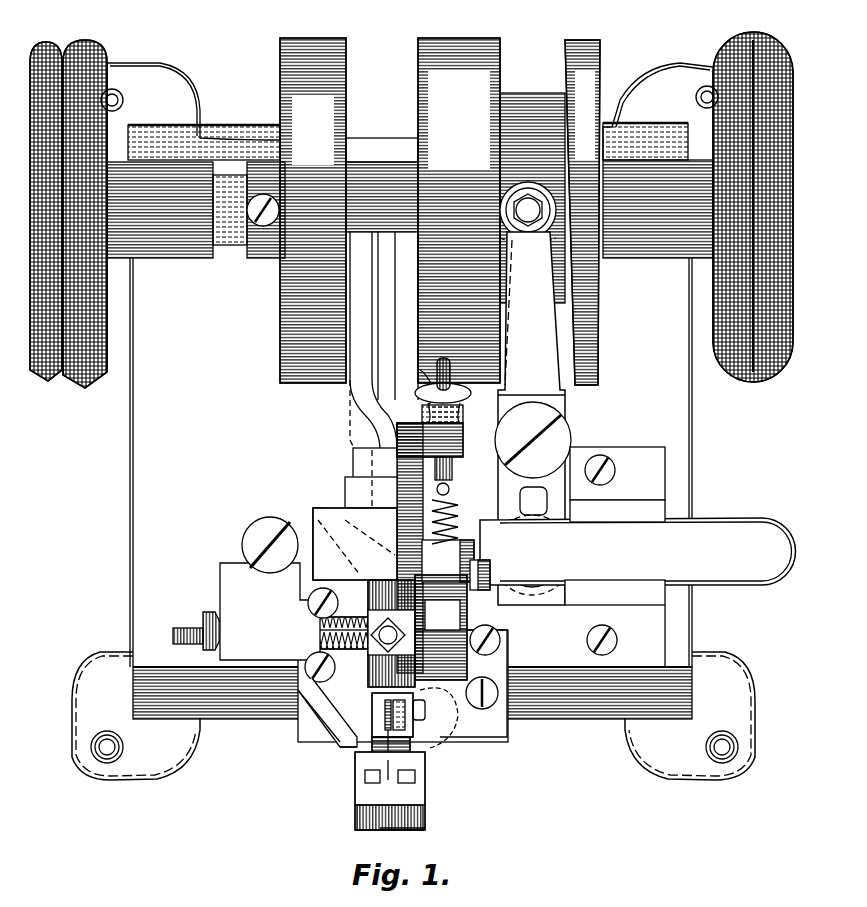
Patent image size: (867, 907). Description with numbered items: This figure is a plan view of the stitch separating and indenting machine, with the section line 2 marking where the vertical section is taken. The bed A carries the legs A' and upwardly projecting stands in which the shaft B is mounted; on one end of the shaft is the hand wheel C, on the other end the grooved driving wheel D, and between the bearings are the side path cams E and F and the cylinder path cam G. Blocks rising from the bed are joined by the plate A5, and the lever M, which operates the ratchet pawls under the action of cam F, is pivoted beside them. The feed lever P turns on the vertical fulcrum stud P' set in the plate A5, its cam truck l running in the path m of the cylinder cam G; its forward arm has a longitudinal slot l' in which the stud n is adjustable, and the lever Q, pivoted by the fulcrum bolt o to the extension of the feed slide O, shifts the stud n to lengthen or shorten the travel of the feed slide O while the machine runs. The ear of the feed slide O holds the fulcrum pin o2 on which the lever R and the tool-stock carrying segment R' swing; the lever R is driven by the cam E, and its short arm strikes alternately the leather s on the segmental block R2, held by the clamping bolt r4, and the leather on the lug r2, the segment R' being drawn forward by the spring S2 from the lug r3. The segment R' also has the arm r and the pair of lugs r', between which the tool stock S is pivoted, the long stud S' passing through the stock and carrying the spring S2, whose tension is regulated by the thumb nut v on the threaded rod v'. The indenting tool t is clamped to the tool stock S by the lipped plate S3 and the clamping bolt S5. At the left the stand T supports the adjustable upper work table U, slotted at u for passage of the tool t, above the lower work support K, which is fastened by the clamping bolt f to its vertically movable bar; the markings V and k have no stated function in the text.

The section line 2 2 is at (345, 235).
The bed A is at (411, 500).
The legs A' is at (413, 421).
The plate A5 is at (614, 484).
The shaft B is at (410, 198).
The hand wheel C is at (753, 207).
The grooved driving wheel D is at (76, 214).
The side path cam E is at (420, 128).
The side path cam F is at (313, 210).
The cylinder path cam G is at (582, 212).
The cam truck l is at (528, 199).
The longitudinal slot l' is at (533, 499).
The cam path m is at (532, 149).
The stud n is at (532, 555).
The feed lever P is at (531, 418).
The fulcrum pin or stud P' is at (533, 440).
The lever Q is at (300, 514).
The feed slide O is at (615, 623).
The fulcrum bolt o is at (270, 545).
The fulcrum pin o2 is at (439, 718).
The lever M is at (373, 366).
The lever R is at (384, 452).
The tool-stock carrying segment R' is at (355, 544).
The segmental block R2 is at (448, 561).
The rearwardly and upwardly projecting arm r is at (473, 665).
The laterally projecting lugs r' is at (380, 637).
The lug r2 is at (470, 688).
The lug r3 is at (462, 440).
The clamping bolt r4 is at (470, 596).
The tool stock S is at (392, 715).
The long stud S' is at (423, 703).
The spring S2 is at (319, 553).
The lipped plate S3 is at (405, 715).
The clamping bolt S5 is at (425, 748).
The piece of leather s is at (441, 627).
The stand T is at (279, 622).
The indenting tool t is at (384, 755).
The upper work support or table U is at (327, 712).
The plate V is at (345, 745).
The thumb nut v is at (443, 396).
The threaded rod v' is at (452, 377).
The work support K is at (390, 791).
The tab k is at (388, 784).
The slot u is at (389, 775).
The stud or clamping bolt f is at (418, 828).